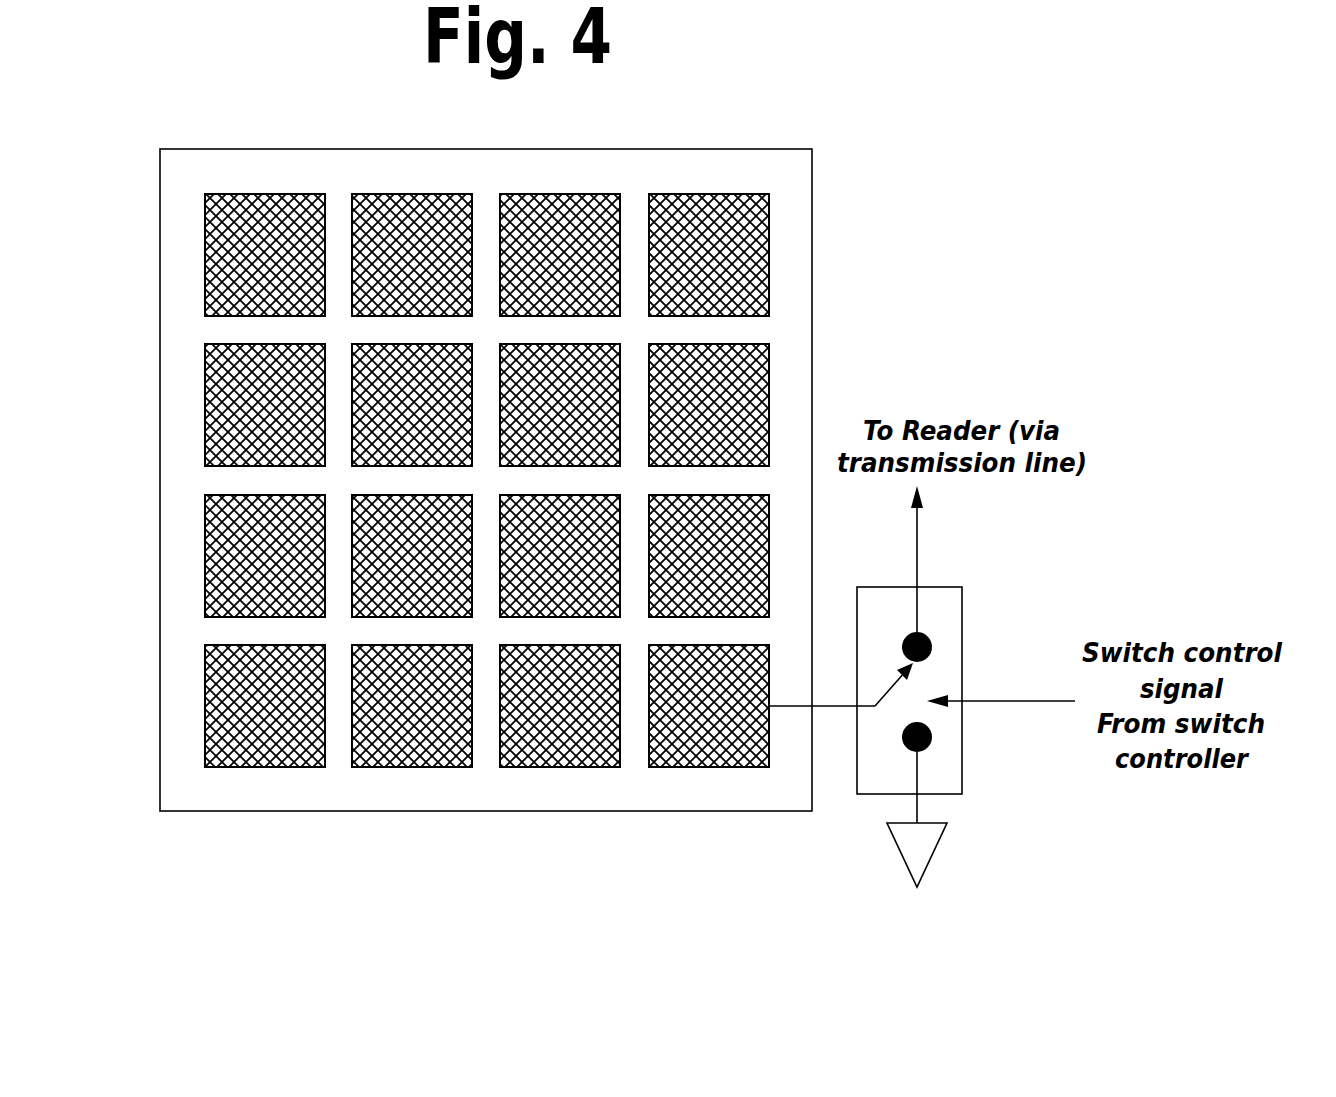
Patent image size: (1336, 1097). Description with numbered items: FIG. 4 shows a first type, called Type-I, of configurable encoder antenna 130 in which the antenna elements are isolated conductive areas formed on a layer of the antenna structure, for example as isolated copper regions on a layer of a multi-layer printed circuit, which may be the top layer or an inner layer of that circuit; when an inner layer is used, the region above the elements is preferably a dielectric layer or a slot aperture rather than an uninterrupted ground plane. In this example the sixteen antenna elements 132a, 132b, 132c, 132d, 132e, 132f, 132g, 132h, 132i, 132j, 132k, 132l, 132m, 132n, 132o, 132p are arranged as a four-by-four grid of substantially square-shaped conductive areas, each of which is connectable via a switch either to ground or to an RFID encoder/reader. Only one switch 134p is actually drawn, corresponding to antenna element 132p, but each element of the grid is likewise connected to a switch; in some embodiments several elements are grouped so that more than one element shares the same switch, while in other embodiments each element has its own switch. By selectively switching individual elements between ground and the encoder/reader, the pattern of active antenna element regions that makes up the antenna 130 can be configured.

The antenna 130 is at (1000, 168).
The antenna element 132a is at (265, 255).
The antenna element 132b is at (412, 255).
The antenna element 132c is at (560, 255).
The antenna element 132d is at (709, 255).
The antenna element 132e is at (265, 405).
The antenna element 132f is at (412, 405).
The antenna element 132g is at (560, 405).
The antenna element 132h is at (709, 405).
The antenna element 132i is at (265, 556).
The antenna element 132j is at (412, 556).
The antenna element 132k is at (560, 556).
The antenna element 132l is at (709, 556).
The antenna element 132m is at (265, 706).
The antenna element 132n is at (412, 706).
The antenna element 132o is at (560, 706).
The antenna element 132p is at (709, 706).
The switch 134p is at (922, 686).